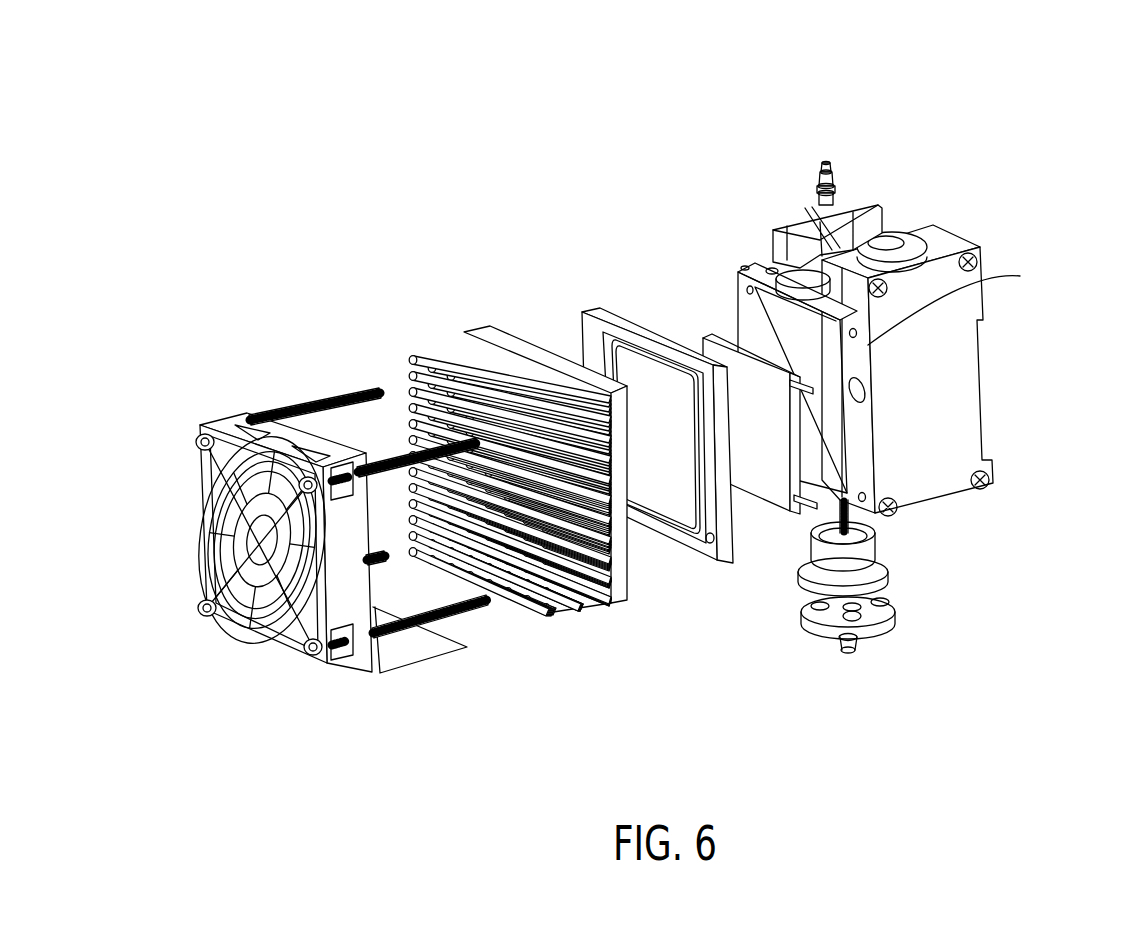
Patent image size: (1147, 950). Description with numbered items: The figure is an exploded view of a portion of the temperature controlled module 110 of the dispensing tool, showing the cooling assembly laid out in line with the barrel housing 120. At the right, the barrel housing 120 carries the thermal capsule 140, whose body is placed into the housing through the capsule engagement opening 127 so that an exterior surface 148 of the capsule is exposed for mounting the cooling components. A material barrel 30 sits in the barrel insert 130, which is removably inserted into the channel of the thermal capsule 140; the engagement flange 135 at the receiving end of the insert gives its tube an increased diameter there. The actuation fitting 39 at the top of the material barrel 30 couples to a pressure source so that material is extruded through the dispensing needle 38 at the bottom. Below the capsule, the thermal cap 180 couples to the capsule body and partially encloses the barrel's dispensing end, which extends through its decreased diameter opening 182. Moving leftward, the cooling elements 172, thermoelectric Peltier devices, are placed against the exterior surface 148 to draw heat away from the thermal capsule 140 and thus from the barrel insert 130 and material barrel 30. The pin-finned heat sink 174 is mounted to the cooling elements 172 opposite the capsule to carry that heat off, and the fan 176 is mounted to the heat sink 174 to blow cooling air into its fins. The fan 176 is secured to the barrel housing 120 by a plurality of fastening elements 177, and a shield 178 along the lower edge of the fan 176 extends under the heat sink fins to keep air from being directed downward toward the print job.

The temperature controlled module 110 is at (700, 98).
The material barrel 30 is at (877, 150).
The actuation fitting 39 is at (793, 191).
The barrel housing 120 is at (1054, 181).
The capsule engagement opening 127 is at (959, 302).
The barrel insert 130 is at (772, 269).
The engagement flange 135 is at (745, 267).
The thermal capsule 140 is at (880, 447).
The exterior surface 148 is at (807, 351).
The cooling elements 172 is at (700, 334).
The heat sink 174 is at (485, 326).
The fan 176 is at (304, 700).
The fastening elements 177 is at (502, 632).
The shield 178 is at (432, 660).
The thermal cap 180 is at (976, 560).
The decreased diameter opening 182 is at (822, 533).
The dispensing needle 38 is at (872, 540).